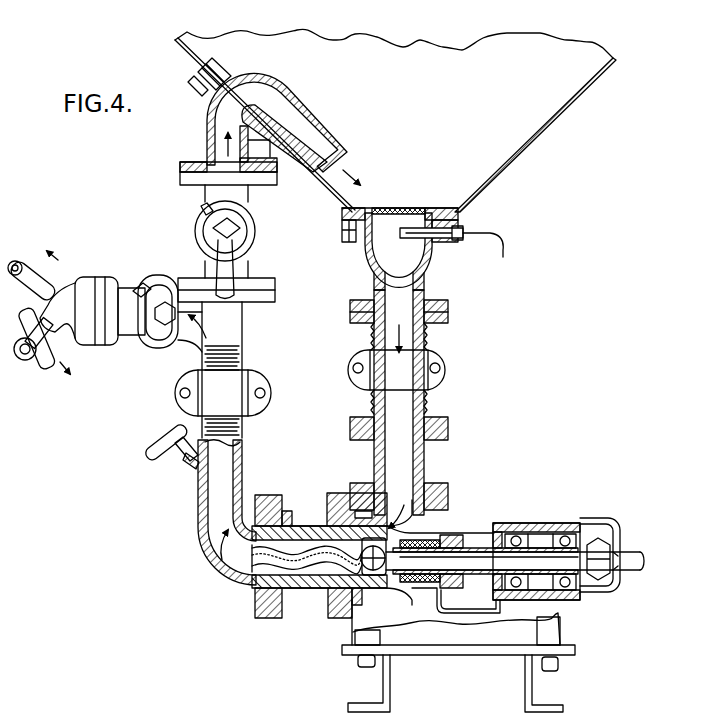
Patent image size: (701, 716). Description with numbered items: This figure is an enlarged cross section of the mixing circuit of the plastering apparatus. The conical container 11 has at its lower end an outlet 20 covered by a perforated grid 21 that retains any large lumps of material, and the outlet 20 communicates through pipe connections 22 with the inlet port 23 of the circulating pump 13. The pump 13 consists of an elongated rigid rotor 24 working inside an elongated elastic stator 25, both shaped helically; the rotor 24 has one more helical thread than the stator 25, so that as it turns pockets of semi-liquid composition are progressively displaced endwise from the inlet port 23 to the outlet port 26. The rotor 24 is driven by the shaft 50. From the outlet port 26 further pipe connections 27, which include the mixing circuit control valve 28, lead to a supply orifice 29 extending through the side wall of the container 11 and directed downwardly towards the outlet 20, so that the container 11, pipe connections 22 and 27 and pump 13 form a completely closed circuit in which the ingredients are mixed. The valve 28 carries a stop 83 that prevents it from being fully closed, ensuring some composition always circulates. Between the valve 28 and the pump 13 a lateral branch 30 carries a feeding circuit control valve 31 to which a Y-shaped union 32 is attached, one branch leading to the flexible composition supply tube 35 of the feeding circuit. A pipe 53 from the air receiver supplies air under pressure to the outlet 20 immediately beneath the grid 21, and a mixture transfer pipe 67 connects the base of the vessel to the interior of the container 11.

The container 11 is at (530, 140).
The circulating pump 13 is at (307, 525).
The outlet 20 is at (410, 260).
The perforated grid 21 is at (391, 208).
The pipe connections 22 is at (400, 402).
The inlet port 23 is at (403, 530).
The rotor 24 is at (300, 568).
The stator 25 is at (307, 588).
The outlet port 26 is at (218, 557).
The pipe connections 27 is at (237, 330).
The mixing circuit control valve 28 is at (237, 230).
The supply orifice 29 is at (317, 144).
The lateral branch 30 is at (191, 333).
The feeding circuit control valve 31 is at (152, 297).
The Y-shaped union 32 is at (70, 292).
The flexible composition supply tube 35 is at (32, 362).
The shaft 50 is at (628, 558).
The pipe 53 is at (503, 246).
The mixture transfer pipe 67 is at (191, 464).
The stop 83 is at (203, 210).